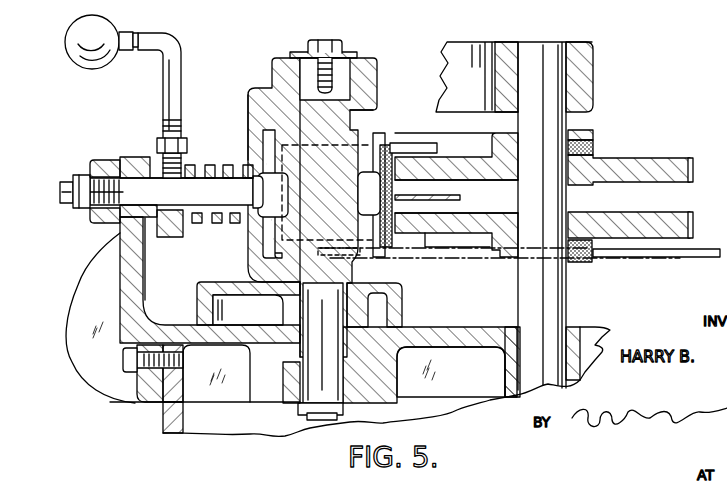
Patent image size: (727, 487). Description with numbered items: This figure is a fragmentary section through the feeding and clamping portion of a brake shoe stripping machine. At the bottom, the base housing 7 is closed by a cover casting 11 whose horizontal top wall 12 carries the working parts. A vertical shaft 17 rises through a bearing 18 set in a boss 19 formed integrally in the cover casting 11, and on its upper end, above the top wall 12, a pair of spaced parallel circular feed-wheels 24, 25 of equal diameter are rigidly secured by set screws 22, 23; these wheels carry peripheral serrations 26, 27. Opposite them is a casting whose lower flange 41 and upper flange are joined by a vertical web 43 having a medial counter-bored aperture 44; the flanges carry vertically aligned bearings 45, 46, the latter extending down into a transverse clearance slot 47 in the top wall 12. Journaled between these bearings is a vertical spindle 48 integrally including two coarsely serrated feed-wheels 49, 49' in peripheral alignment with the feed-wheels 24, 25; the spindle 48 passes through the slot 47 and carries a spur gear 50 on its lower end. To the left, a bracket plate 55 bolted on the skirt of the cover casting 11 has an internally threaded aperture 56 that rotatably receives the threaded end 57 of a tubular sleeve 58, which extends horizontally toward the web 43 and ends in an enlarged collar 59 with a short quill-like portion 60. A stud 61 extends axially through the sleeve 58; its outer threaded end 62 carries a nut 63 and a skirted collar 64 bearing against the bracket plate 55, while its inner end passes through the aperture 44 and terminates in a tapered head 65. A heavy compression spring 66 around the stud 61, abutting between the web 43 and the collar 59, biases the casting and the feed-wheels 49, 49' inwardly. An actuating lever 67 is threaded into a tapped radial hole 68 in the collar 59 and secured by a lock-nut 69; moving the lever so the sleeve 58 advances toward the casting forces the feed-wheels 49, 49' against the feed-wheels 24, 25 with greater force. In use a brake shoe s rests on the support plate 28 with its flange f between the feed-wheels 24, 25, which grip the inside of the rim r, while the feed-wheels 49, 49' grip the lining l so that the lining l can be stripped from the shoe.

The base housing 7 is at (163, 423).
The cover casting 11 is at (173, 393).
The horizontal top wall 12 is at (445, 328).
The vertical shaft 17 is at (568, 118).
The bearing 18 is at (574, 325).
The boss 19 is at (500, 372).
The set screw 22 is at (595, 140).
The set screw 23 is at (593, 245).
The feed-wheel 24 is at (668, 157).
The feed-wheel 25 is at (675, 215).
The peripheral serrations 26 is at (695, 160).
The peripheral serrations 27 is at (695, 226).
The support plate 28 is at (705, 256).
The lower flange 41 is at (197, 300).
The vertical web 43 is at (247, 110).
The counter-bored aperture 44 is at (250, 160).
The bearing 45 is at (358, 75).
The bearing 46 is at (293, 303).
The transverse clearance slot 47 is at (268, 362).
The vertical spindle 48 is at (373, 115).
The coarsely serrated feed-wheel 49 is at (391, 184).
The coarsely serrated feed-wheel 49' is at (396, 213).
The spur gear 50 is at (287, 388).
The bracket plate 55 is at (127, 307).
The internally threaded aperture 56 is at (140, 157).
The threaded end 57 is at (112, 223).
The tubular sleeve 58 is at (152, 222).
The collar 59 is at (160, 137).
The quill-like portion 60 is at (194, 165).
The stud 61 is at (166, 199).
The outer threaded end 62 is at (90, 218).
The nut 63 is at (88, 172).
The skirted collar 64 is at (98, 160).
The tapered head 65 is at (264, 203).
The compression spring 66 is at (220, 224).
The actuating lever 67 is at (167, 30).
The tapped radial hole 68 is at (185, 138).
The lock-nut 69 is at (164, 112).
The brake shoe s is at (439, 144).
The lining l is at (380, 198).
The flange f is at (462, 198).
The rim r is at (435, 250).